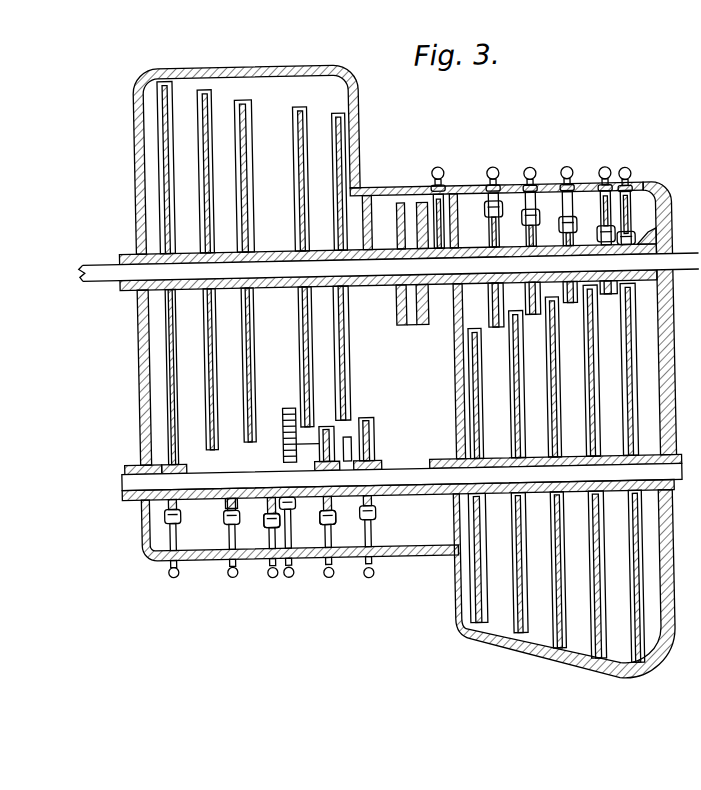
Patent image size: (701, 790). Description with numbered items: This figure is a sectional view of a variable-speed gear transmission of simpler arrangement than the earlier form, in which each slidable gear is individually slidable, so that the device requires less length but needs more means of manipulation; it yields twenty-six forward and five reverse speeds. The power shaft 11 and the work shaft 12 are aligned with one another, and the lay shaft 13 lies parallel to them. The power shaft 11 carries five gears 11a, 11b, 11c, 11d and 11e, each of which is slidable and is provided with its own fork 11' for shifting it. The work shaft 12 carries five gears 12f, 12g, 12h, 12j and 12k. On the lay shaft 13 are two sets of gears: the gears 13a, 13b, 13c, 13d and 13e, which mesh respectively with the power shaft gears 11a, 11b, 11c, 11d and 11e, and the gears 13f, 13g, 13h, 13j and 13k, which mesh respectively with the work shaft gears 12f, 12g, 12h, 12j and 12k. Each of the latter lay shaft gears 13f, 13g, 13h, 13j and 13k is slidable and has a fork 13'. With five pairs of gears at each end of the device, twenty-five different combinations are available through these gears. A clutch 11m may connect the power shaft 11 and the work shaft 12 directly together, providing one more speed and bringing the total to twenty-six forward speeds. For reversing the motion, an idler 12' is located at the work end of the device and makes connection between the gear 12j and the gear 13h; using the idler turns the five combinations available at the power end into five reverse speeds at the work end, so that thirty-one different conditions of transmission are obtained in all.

The power shaft 11 is at (447, 371).
The fork 11' is at (551, 184).
The gear 11a is at (497, 330).
The gear 11b is at (533, 318).
The gear 11c is at (572, 307).
The gear 11d is at (610, 299).
The gear 11e is at (651, 246).
The clutch 11m is at (404, 312).
The work shaft 12 is at (374, 291).
The idler 12' is at (295, 419).
The gear 12f is at (167, 380).
The gear 12g is at (210, 86).
The gear 12h is at (252, 99).
The gear 12j is at (298, 160).
The gear 12k is at (364, 168).
The lay shaft 13 is at (376, 485).
The fork 13' is at (264, 572).
The gear 13a is at (474, 630).
The gear 13b is at (516, 638).
The gear 13c is at (554, 654).
The gear 13d is at (592, 665).
The gear 13e is at (630, 670).
The gear 13f is at (141, 508).
The gear 13g is at (222, 498).
The gear 13h is at (265, 525).
The gear 13j is at (316, 524).
The gear 13k is at (373, 432).